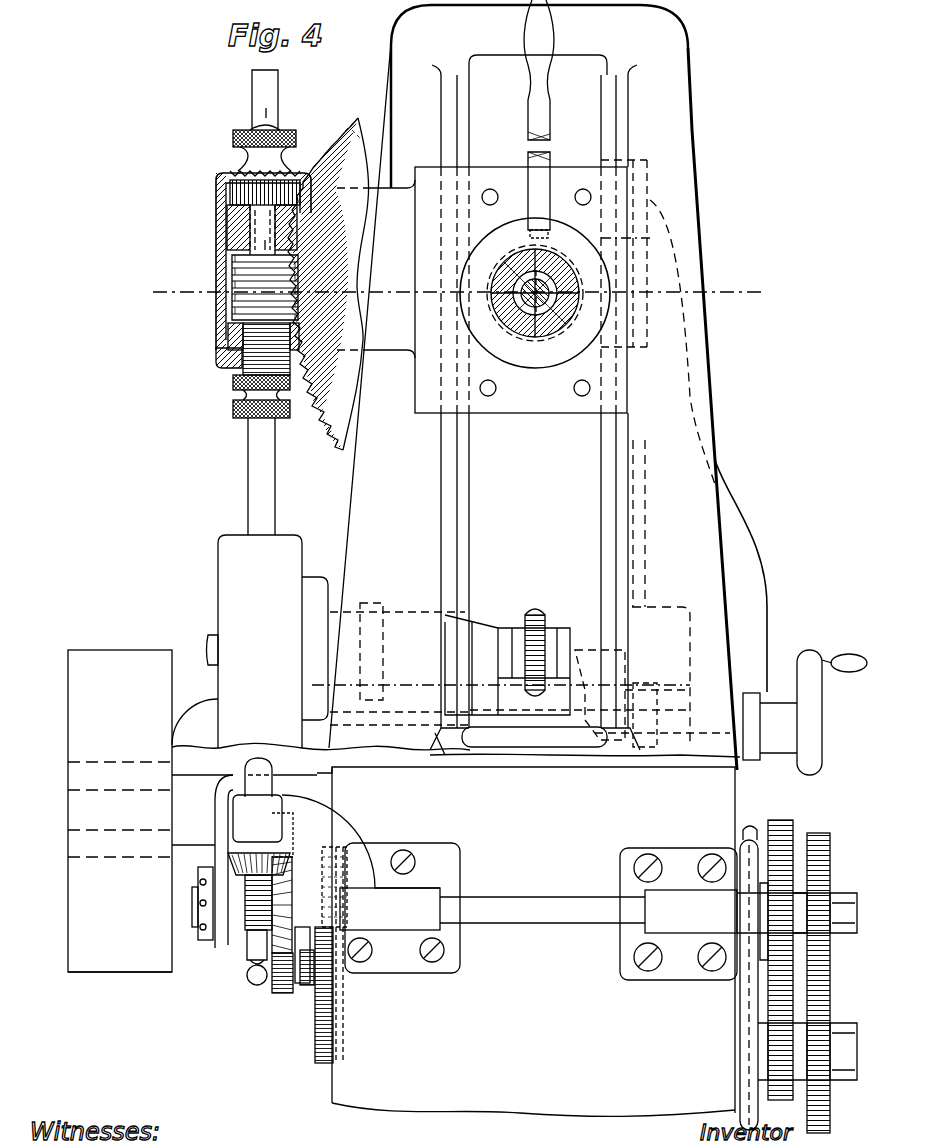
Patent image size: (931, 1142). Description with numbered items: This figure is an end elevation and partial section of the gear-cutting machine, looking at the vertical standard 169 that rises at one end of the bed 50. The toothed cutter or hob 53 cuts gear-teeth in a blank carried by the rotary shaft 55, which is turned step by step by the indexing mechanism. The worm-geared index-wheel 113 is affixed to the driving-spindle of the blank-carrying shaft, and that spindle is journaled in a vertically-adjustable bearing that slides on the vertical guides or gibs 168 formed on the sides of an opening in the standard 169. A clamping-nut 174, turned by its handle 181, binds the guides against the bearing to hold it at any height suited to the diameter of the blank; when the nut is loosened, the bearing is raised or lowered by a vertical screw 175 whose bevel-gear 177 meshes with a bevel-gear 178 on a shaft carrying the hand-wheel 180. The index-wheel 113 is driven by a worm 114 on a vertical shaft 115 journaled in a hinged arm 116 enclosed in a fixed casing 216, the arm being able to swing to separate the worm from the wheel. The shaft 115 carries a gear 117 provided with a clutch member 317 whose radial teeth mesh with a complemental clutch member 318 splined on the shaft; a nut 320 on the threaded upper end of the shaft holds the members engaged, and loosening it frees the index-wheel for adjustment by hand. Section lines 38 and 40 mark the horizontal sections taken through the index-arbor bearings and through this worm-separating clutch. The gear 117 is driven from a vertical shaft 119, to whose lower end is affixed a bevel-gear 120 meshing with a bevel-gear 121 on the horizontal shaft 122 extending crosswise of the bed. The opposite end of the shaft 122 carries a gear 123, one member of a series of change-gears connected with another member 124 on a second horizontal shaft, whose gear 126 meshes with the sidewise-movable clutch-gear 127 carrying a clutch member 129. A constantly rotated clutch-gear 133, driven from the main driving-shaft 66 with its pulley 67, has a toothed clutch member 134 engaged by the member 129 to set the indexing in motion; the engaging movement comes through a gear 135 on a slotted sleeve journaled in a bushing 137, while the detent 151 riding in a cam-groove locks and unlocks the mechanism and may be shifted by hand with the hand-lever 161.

The section line 38 is at (460, 293).
The section line 40 is at (264, 172).
The bed 50 is at (735, 790).
The toothed cutter or hob 53 is at (533, 612).
The rotary shaft 55 is at (531, 345).
The main driving-shaft 66 is at (73, 807).
The pulley 67 is at (103, 954).
The worm-geared index-wheel 113 is at (360, 135).
The worm 114 is at (232, 291).
The vertical shaft 115 is at (237, 225).
The hinged arm 116 is at (240, 246).
The gear 117 is at (232, 191).
The vertical shaft 119 is at (258, 88).
The bevel-gear 120 is at (230, 858).
The bevel-gear 121 is at (247, 952).
The horizontal shaft 122 is at (511, 915).
The gear 123 is at (828, 846).
The change-gear 124 is at (776, 826).
The gear 126 is at (326, 1060).
The clutch-gear 127 is at (337, 924).
The clutch member 129 is at (310, 985).
The clutch-gear 133 is at (283, 992).
The toothed clutch member 134 is at (285, 858).
The gear 135 is at (240, 948).
The bushing 137 is at (200, 945).
The detent 151 is at (300, 976).
The hand-lever 161 is at (258, 976).
The vertical guides or gibs 168 is at (452, 485).
The vertical standard 169 is at (357, 483).
The clamping-nut 174 is at (573, 240).
The vertical screw 175 is at (633, 190).
The bevel-gear 177 is at (637, 680).
The bevel-gear 178 is at (630, 768).
The hand-wheel 180 is at (822, 716).
The handle 181 is at (545, 120).
The fixed casing 216 is at (216, 352).
The clutch member 317 is at (217, 176).
The complemental clutch member 318 is at (245, 168).
The nut 320 is at (240, 138).